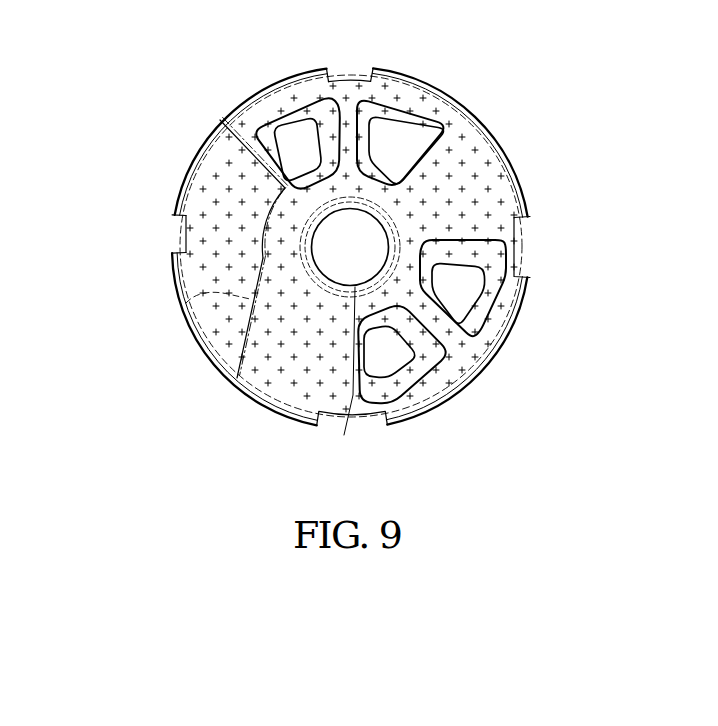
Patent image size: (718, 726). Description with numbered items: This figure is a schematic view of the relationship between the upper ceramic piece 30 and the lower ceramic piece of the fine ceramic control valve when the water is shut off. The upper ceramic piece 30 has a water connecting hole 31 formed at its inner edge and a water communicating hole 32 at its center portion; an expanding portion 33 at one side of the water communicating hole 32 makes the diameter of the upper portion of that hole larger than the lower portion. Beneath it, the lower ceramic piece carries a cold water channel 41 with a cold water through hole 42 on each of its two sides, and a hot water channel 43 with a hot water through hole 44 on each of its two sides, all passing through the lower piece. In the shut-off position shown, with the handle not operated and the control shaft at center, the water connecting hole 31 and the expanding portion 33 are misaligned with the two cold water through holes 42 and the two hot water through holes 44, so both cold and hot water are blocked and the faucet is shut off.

The upper ceramic piece 30 is at (478, 395).
The water connecting hole 31 is at (178, 225).
The water communicating hole 32 is at (326, 234).
The expanding portion 33 is at (236, 378).
The cold water channel 41 is at (186, 303).
The cold water through hole 42 is at (291, 135).
The hot water channel 43 is at (520, 190).
The hot water through hole 44 is at (410, 135).